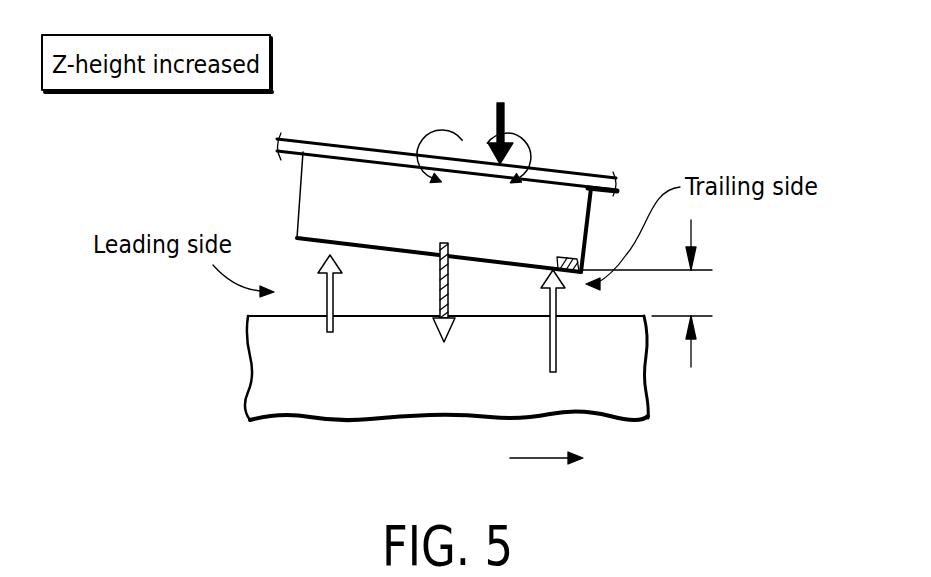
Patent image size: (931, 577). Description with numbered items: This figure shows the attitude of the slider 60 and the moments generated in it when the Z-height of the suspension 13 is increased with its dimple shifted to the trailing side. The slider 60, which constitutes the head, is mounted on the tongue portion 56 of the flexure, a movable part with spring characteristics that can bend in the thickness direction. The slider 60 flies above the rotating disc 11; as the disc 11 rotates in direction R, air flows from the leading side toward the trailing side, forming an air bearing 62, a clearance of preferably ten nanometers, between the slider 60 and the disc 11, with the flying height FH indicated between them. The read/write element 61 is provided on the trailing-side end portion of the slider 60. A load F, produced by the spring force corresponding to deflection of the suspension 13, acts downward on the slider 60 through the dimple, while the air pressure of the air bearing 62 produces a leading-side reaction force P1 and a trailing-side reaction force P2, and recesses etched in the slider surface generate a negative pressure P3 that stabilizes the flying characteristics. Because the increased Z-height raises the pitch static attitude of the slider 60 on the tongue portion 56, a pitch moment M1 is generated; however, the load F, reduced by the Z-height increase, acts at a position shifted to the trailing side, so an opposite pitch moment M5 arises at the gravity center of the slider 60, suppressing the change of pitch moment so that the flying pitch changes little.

The disc 11 is at (428, 382).
The suspension 13 is at (333, 91).
The tongue portion 56 is at (550, 173).
The slider 60 is at (553, 220).
The read/write element 61 is at (573, 257).
The air bearing 62 is at (363, 298).
The load F is at (500, 116).
The pitch moment M5 is at (442, 130).
The pitch moment M1 is at (521, 137).
The leading-side reaction force P1 is at (320, 292).
The trailing-side reaction force P2 is at (545, 302).
The negative pressure P3 is at (438, 290).
The flying height FH is at (692, 292).
The disk rotation direction R is at (558, 462).